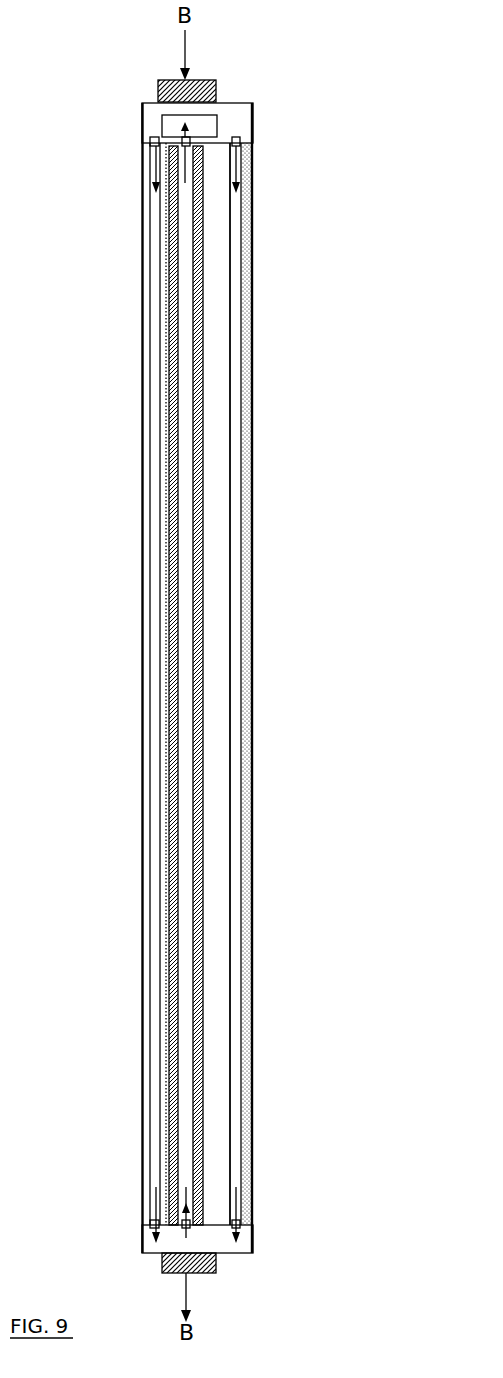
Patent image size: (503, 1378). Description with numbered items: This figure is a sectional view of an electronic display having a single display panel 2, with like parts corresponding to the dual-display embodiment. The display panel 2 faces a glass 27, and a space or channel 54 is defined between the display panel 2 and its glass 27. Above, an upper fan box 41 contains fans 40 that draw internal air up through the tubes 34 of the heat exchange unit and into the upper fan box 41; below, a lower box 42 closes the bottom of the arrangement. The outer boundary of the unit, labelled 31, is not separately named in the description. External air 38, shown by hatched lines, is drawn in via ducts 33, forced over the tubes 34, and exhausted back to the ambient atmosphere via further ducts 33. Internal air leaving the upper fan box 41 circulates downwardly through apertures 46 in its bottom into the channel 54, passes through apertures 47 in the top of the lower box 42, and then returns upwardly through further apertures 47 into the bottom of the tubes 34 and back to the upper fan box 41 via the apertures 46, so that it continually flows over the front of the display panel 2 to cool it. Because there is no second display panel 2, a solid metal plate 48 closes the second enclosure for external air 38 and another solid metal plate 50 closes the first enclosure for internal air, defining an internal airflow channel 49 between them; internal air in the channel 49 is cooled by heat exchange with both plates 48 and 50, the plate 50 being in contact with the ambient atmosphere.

The display panel 2 is at (217, 826).
The glass 27 is at (253, 700).
The outer tube 31 is at (136, 589).
The duct 33 is at (213, 84).
The tube 34 is at (185, 393).
The external air 38 is at (190, 288).
The fan 40 is at (213, 122).
The upper fan box 41 is at (148, 105).
The lower box 42 is at (142, 1243).
The aperture 46 is at (152, 140).
The aperture 47 is at (150, 1222).
The solid metal plate 48 is at (168, 745).
The internal airflow channel 49 is at (157, 809).
The solid metal plate 50 is at (147, 876).
The channel 54 is at (237, 458).